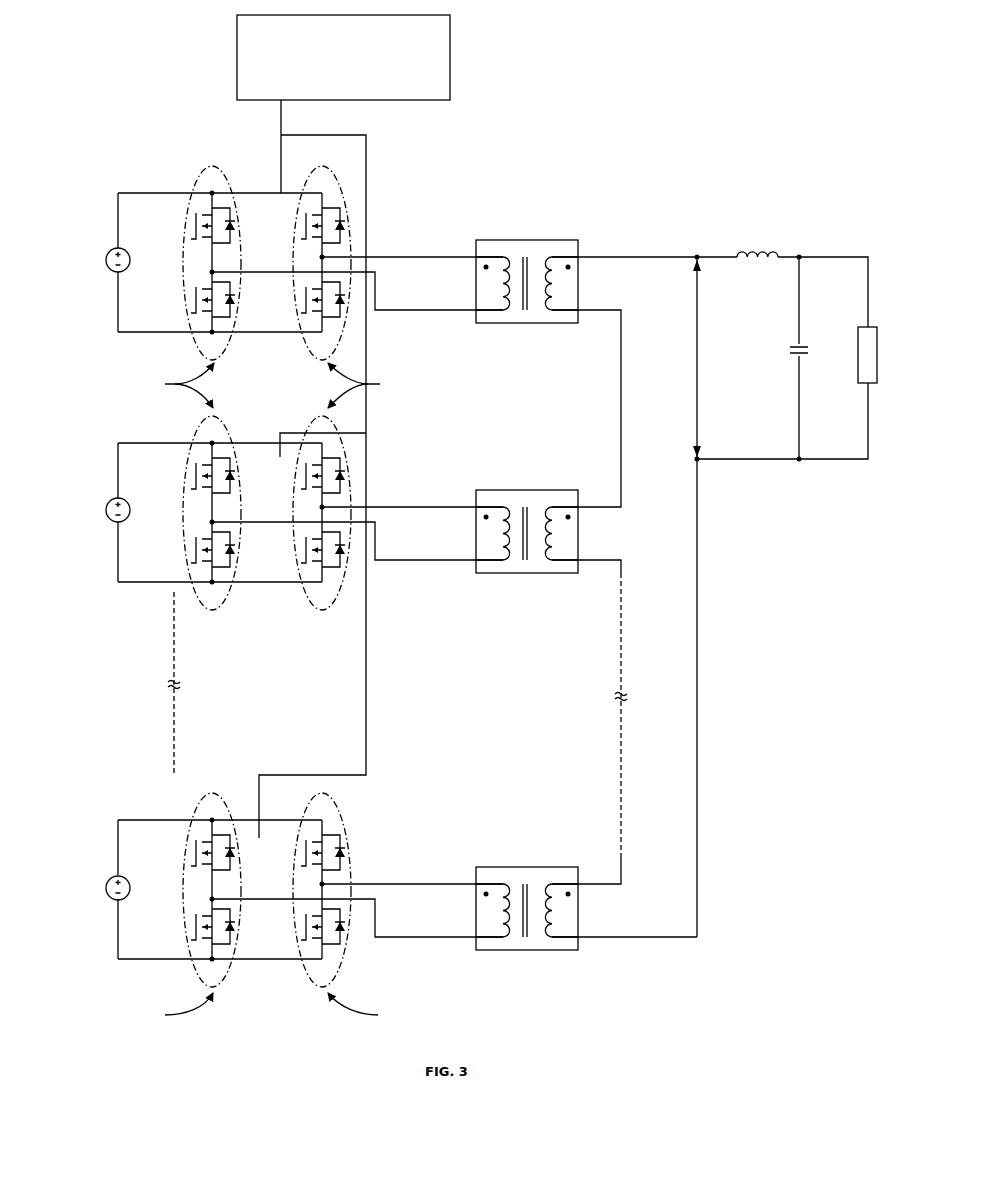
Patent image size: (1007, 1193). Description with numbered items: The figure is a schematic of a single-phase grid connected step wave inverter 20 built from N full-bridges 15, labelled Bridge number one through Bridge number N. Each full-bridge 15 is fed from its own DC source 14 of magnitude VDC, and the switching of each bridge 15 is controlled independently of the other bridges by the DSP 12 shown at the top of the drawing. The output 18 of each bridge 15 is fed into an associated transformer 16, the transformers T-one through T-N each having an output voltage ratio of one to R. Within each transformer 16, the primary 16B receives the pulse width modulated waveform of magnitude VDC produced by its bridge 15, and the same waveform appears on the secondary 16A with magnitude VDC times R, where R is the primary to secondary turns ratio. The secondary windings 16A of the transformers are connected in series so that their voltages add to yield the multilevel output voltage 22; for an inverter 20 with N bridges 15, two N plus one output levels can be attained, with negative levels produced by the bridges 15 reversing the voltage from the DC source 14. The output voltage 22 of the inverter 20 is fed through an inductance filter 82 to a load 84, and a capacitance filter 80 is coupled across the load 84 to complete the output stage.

The DSP 12 is at (450, 92).
The DC source 14 is at (116, 278).
The full-bridge 15 is at (119, 176).
The transformer 16 is at (540, 240).
The secondary winding 16A is at (561, 257).
The primary winding 16B is at (494, 257).
The bridge output 18 is at (420, 284).
The step wave inverter 20 is at (780, 183).
The output voltage 22 is at (698, 405).
The capacitance filter 80 is at (803, 352).
The inductance filter 82 is at (777, 251).
The load 84 is at (856, 355).